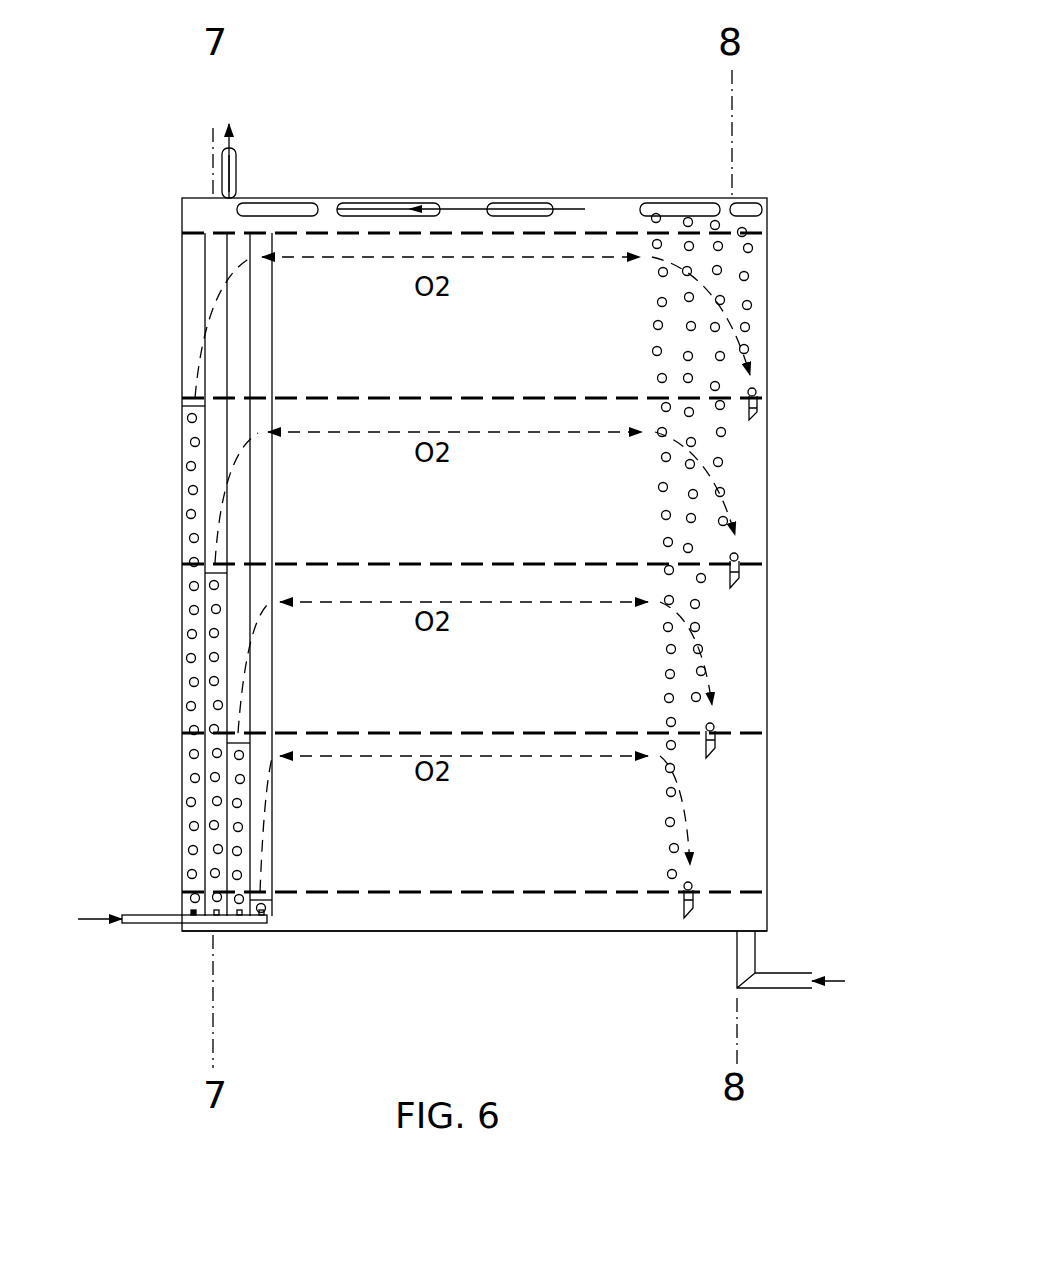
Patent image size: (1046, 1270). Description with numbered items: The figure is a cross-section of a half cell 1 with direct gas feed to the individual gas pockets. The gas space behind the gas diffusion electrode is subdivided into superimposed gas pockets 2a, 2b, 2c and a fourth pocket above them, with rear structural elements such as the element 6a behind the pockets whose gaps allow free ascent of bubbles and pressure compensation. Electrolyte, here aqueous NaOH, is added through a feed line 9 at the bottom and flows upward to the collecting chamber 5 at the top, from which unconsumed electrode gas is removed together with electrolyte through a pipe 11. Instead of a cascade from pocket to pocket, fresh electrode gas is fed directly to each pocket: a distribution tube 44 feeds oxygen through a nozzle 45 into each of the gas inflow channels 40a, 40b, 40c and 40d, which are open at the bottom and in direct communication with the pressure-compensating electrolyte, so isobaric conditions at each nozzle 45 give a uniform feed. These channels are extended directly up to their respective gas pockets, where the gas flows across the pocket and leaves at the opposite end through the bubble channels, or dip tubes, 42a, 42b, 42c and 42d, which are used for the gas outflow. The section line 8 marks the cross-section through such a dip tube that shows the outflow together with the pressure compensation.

The half cell 1 is at (767, 580).
The collecting chamber 5 is at (607, 207).
The gas pocket 2a is at (752, 778).
The gas pocket 2b is at (752, 650).
The gas pocket 2c is at (752, 490).
The rear structural element 6a is at (518, 892).
The section 8- 8 is at (525, 910).
The feed line 9 is at (772, 988).
The pipe 11 is at (238, 162).
The gas inflow channel 40a is at (262, 910).
The gas inflow channel 40b is at (238, 764).
The gas inflow channel 40c is at (216, 596).
The gas inflow channel 40d is at (192, 436).
The bubble channel 42a is at (694, 902).
The bubble channel 42b is at (716, 740).
The dip tube 42c is at (740, 568).
The bubble channel 42d is at (758, 407).
The distribution tube 44 is at (157, 930).
The nozzle 45 is at (193, 930).